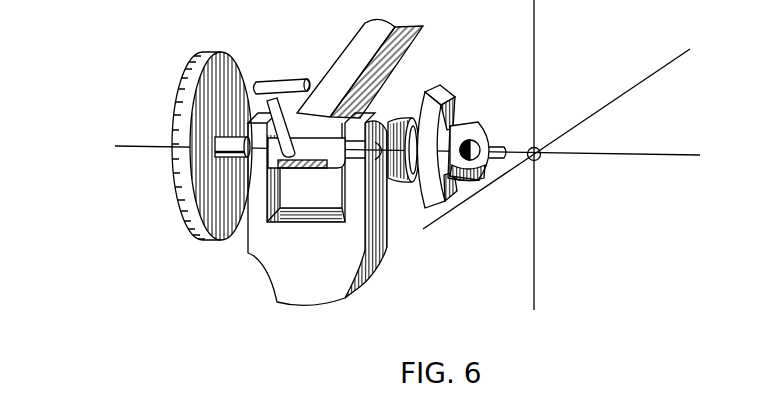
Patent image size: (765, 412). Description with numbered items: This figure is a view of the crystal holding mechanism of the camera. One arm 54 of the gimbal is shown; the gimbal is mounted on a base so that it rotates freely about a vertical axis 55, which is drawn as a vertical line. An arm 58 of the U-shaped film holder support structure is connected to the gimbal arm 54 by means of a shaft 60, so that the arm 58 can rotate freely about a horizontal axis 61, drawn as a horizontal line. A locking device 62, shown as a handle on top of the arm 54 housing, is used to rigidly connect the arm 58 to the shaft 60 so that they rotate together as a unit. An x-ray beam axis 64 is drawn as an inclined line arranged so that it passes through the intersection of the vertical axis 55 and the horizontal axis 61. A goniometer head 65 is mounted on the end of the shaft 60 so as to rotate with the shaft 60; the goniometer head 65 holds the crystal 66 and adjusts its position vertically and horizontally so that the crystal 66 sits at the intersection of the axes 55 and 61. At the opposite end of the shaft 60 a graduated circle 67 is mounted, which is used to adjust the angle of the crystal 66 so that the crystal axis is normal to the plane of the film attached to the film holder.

The arm 54 is at (275, 266).
The vertical axis 55 is at (535, 275).
The arm 58 is at (362, 48).
The shaft 60 is at (342, 166).
The horizontal axis 61 is at (646, 160).
The locking device 62 is at (301, 78).
The x-ray beam axis 64 is at (441, 222).
The goniometer head 65 is at (448, 95).
The crystal 66 is at (539, 160).
The graduated circle 67 is at (188, 63).